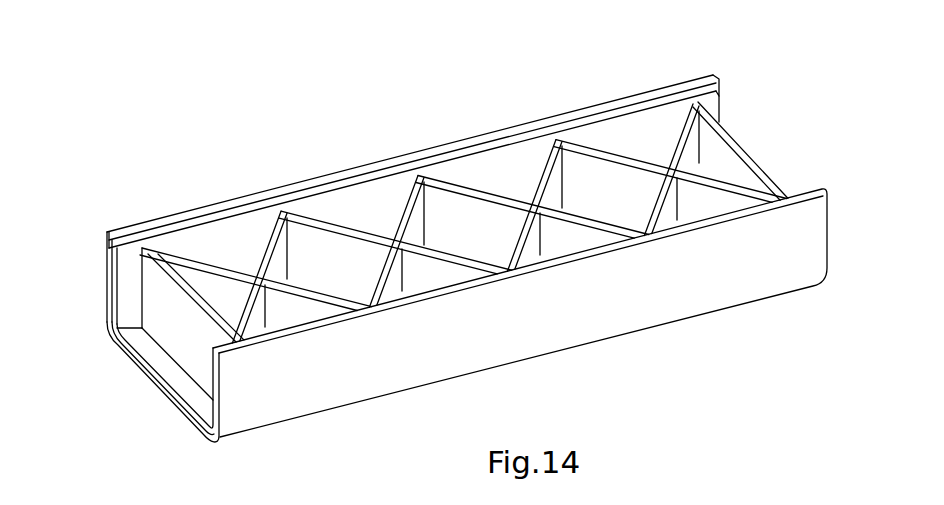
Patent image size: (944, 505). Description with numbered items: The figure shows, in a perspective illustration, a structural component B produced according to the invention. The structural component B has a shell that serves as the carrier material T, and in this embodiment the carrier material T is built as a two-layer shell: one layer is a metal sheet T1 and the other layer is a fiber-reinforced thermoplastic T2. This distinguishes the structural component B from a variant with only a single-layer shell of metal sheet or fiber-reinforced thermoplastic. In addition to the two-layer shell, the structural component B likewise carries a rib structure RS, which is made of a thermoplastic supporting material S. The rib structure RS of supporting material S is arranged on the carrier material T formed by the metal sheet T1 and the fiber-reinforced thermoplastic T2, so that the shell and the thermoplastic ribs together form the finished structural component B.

The structural component B is at (482, 124).
The carrier material T is at (310, 204).
The metal sheet T1 is at (143, 232).
The fiber-reinforced thermoplastic T2 is at (132, 305).
The rib structure RS is at (615, 183).
The supporting material S is at (715, 165).